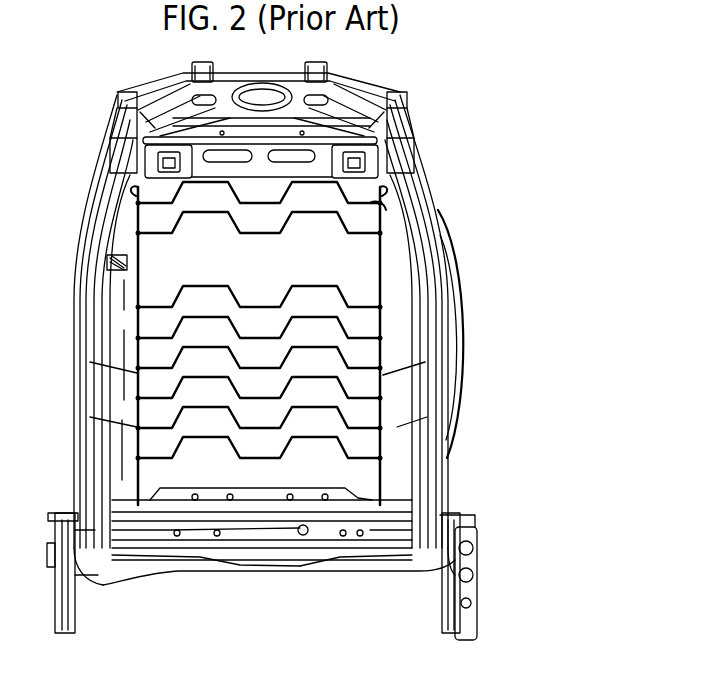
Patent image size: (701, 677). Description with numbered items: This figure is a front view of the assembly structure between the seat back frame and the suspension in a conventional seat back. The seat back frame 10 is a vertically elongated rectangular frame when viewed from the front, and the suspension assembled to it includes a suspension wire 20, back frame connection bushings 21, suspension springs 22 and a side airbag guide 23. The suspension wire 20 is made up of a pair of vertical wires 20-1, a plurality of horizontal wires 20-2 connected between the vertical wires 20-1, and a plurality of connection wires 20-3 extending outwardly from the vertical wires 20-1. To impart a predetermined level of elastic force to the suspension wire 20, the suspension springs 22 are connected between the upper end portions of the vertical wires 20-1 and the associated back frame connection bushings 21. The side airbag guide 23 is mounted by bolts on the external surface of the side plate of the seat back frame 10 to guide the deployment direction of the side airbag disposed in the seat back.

The seat back frame 10 is at (434, 147).
The suspension wire 20 is at (135, 214).
The vertical wires 20-1 is at (140, 286).
The horizontal wires 20-2 is at (315, 212).
The connection wires 20-3 is at (420, 358).
The back frame connection bushings 21 is at (92, 388).
The suspension springs 22 is at (116, 262).
The side airbag guide 23 is at (452, 306).